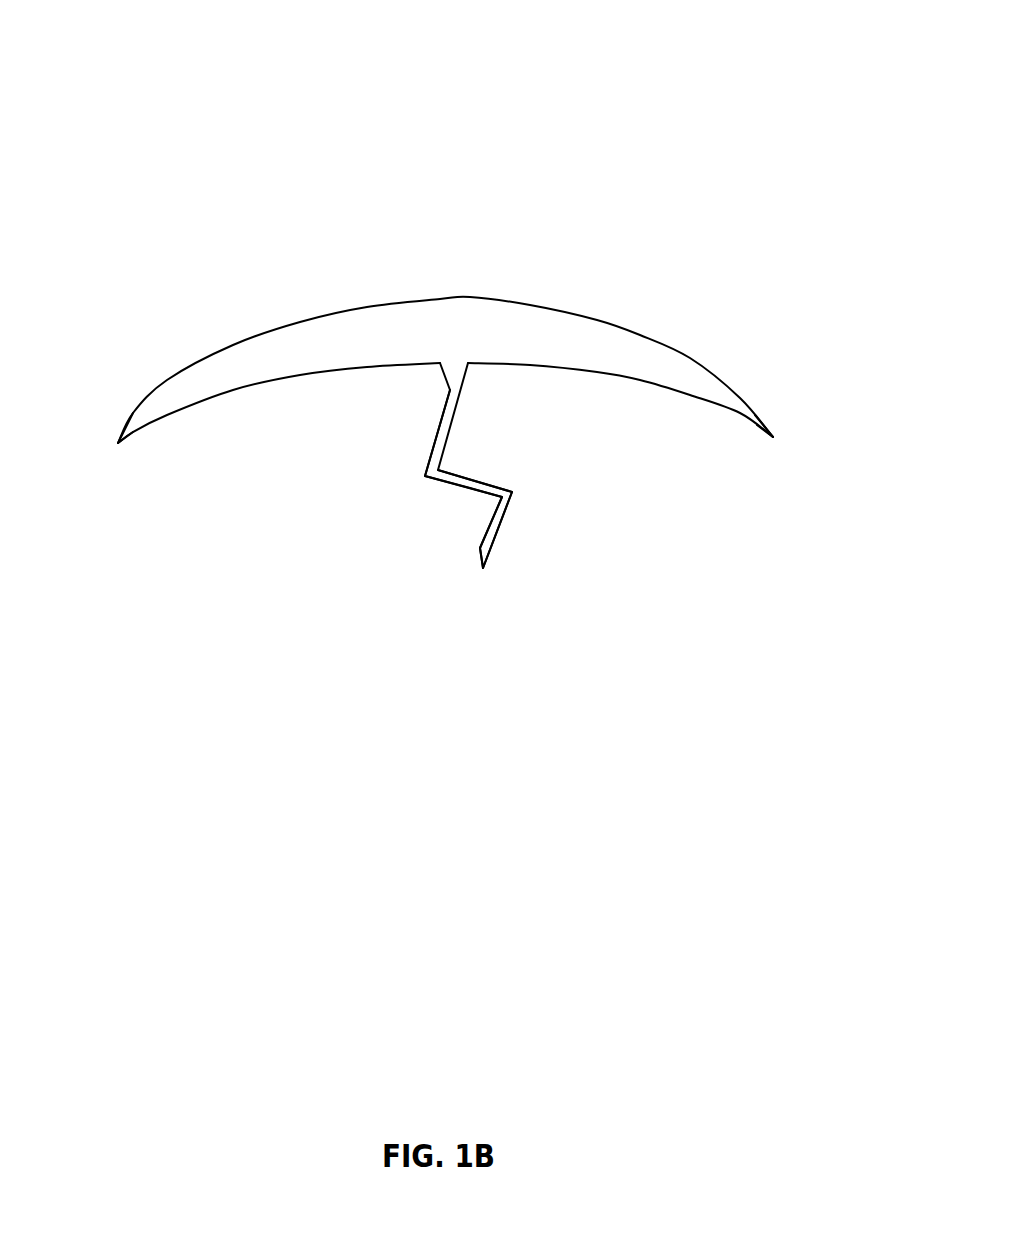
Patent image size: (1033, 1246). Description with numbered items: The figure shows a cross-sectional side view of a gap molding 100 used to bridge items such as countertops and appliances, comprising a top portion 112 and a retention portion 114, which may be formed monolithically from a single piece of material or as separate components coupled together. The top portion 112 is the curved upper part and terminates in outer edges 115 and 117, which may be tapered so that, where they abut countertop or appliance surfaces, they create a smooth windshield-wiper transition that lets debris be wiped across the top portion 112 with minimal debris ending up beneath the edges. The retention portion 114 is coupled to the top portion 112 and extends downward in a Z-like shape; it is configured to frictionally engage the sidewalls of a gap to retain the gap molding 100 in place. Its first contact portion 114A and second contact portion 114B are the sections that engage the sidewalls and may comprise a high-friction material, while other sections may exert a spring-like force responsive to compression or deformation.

The gap molding 100 is at (602, 112).
The top portion 112 is at (407, 317).
The retention portion 114 is at (473, 483).
The first contact portion 114A is at (410, 483).
The second contact portion 114B is at (528, 487).
The outer edge 115 is at (118, 443).
The outer edge 117 is at (750, 418).